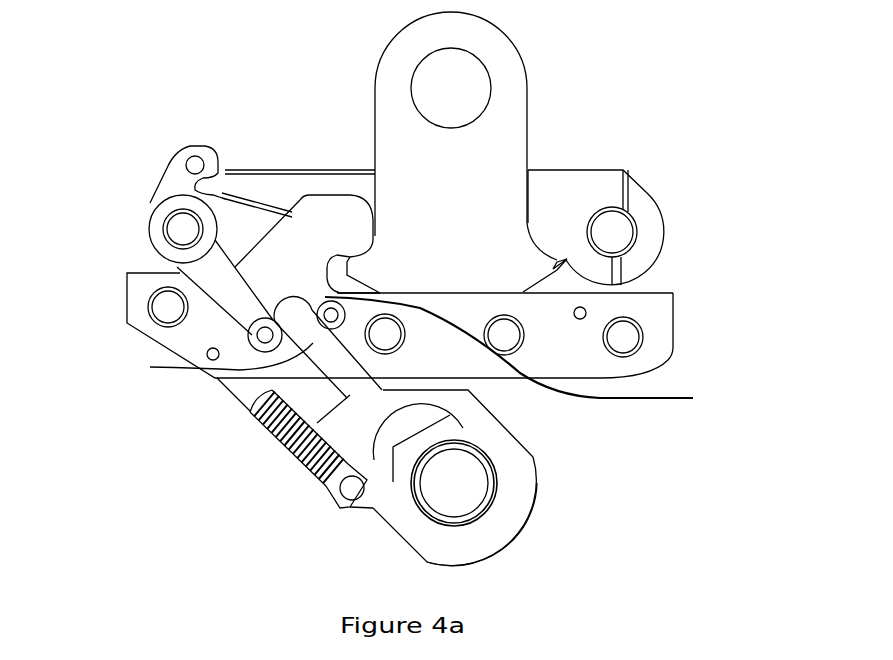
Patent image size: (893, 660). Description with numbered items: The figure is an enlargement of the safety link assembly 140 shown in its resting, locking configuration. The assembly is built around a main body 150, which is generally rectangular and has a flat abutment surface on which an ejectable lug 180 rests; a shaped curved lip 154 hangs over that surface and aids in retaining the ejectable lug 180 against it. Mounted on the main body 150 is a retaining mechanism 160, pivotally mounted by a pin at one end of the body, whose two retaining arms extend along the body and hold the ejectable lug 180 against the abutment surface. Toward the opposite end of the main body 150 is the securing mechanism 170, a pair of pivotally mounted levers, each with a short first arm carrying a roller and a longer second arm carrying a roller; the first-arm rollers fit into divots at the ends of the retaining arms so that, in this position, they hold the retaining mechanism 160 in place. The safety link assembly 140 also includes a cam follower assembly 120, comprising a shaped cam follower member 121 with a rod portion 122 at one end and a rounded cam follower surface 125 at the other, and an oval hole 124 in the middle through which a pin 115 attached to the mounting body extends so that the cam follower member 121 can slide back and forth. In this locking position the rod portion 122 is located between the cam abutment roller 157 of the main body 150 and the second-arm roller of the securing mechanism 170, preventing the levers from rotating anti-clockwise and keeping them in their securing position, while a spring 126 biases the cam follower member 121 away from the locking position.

The ejectable lug 180 is at (498, 45).
The shaped curved lip 154 is at (317, 218).
The securing mechanism 170 is at (177, 182).
The retaining mechanism 160 is at (563, 187).
The safety link assembly 140 is at (715, 100).
The main body 150 is at (662, 323).
The cam abutment roller 157 is at (539, 360).
The rod portion 122 is at (150, 367).
The spring 126 is at (258, 430).
The cam follower assembly 120 is at (260, 470).
The cam follower member 121 is at (527, 478).
The oval hole 124 is at (473, 432).
The pin 115 is at (453, 488).
The rounded cam follower surface 125 is at (513, 550).